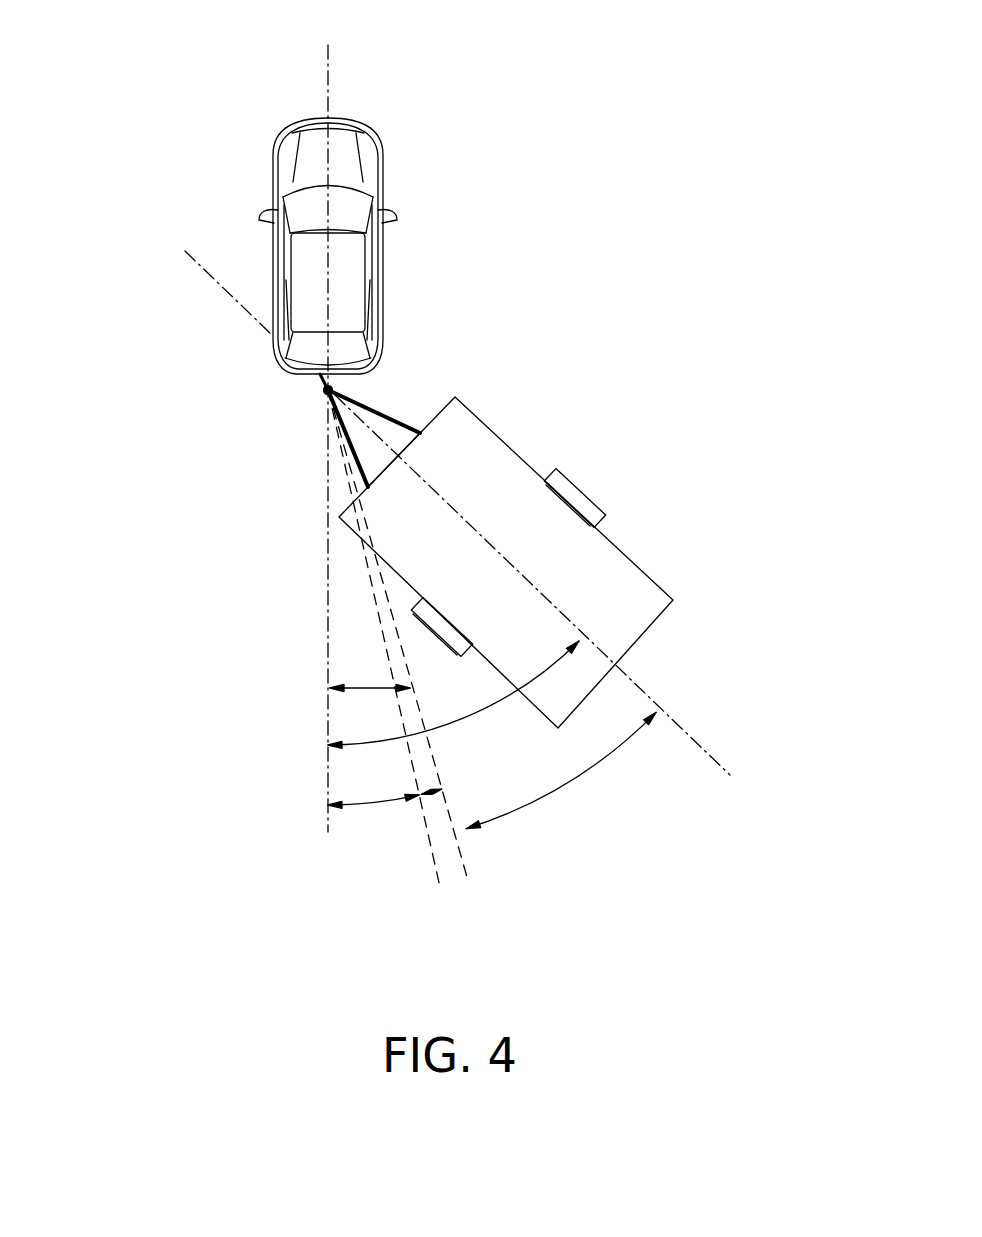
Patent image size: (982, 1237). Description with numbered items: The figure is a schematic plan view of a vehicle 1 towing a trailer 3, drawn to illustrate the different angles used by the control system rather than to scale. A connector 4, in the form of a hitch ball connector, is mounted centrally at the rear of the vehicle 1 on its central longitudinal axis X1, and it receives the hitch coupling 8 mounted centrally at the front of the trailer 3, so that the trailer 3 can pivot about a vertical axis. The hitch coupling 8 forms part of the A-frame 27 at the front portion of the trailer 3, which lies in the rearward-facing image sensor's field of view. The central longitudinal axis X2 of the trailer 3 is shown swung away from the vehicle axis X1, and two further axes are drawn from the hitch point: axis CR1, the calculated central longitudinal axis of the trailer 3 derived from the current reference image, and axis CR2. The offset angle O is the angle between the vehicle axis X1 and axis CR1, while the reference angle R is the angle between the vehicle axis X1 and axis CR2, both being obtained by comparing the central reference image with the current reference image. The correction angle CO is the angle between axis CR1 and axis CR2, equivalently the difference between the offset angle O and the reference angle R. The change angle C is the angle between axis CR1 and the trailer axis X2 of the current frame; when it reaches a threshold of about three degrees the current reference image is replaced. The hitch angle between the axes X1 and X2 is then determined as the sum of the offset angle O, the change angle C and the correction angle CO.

The vehicle 1 is at (447, 140).
The trailer 3 is at (608, 582).
The connector 4 is at (323, 392).
The hitch coupling 8 is at (323, 396).
The A-frame 27 is at (400, 422).
The central longitudinal axis of the vehicle X1 is at (314, 447).
The central longitudinal axis of the trailer X2 is at (471, 520).
The offset angle O is at (370, 701).
The change angle C is at (561, 770).
The reference angle R is at (373, 805).
The correction angle CO is at (437, 798).
The axis CR1 is at (419, 648).
The axis CR2 is at (384, 653).